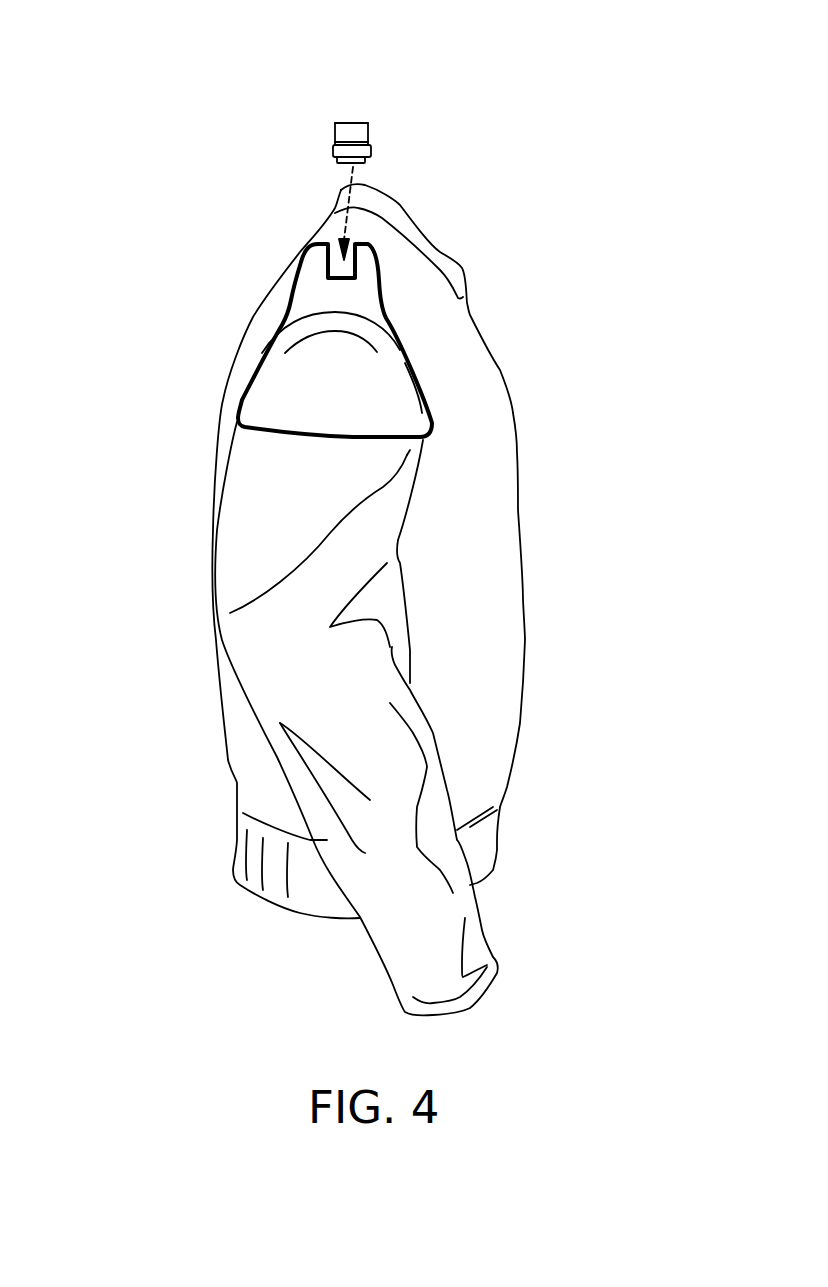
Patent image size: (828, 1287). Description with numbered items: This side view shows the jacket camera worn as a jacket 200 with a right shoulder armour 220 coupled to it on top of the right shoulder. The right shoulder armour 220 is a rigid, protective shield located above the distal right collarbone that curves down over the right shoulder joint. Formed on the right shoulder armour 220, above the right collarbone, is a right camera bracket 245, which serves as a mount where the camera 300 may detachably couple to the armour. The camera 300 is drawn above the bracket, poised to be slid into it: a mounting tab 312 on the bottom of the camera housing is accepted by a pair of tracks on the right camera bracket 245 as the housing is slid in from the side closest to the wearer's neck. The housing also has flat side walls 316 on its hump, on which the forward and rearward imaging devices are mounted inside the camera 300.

The jacket 200 is at (493, 623).
The right shoulder armour 220 is at (303, 367).
The right camera bracket 245 is at (313, 270).
The camera 300 is at (397, 135).
The mounting tab 312 is at (365, 160).
The flat side walls 316 is at (368, 122).